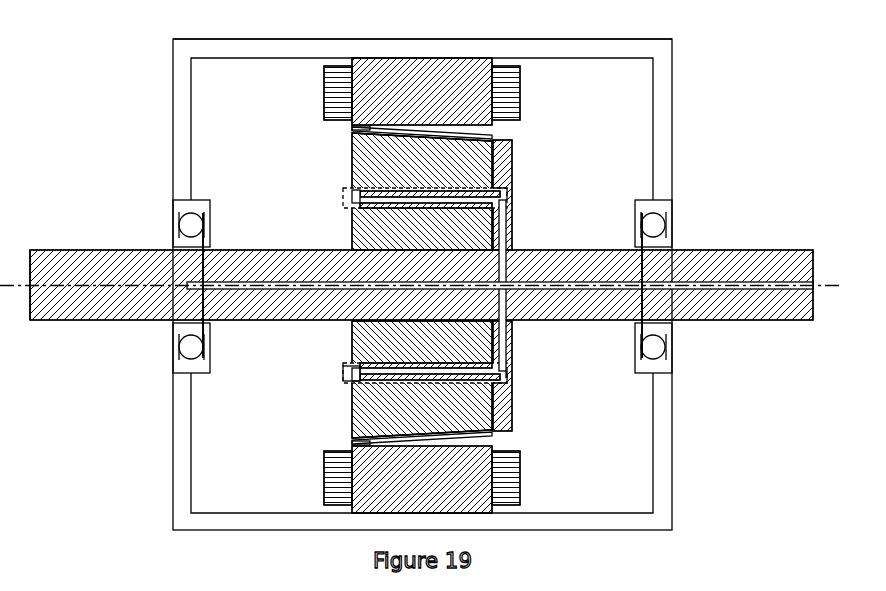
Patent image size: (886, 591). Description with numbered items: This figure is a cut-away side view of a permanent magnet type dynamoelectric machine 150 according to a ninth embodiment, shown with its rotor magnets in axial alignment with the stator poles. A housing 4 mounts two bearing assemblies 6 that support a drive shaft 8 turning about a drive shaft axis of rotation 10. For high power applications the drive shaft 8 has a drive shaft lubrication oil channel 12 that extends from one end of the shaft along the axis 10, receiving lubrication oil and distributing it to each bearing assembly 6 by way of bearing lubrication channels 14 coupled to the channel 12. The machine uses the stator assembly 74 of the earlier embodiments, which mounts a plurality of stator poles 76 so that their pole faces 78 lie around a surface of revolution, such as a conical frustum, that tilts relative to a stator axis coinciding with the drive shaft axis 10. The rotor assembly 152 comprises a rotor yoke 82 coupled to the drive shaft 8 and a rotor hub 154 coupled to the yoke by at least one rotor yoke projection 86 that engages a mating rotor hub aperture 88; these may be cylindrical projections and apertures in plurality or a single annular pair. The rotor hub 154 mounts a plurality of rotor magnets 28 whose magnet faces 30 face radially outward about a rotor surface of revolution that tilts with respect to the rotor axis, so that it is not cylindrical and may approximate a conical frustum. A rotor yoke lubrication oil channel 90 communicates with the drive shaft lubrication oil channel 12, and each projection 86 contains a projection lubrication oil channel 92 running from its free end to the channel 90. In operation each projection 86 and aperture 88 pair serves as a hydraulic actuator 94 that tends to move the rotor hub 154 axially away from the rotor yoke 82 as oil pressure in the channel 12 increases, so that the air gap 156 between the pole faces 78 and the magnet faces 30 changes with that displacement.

The housing 4 is at (618, 60).
The bearing assembly 6 is at (176, 201).
The drive shaft 8 is at (743, 250).
The drive shaft axis of rotation 10 is at (15, 290).
The drive shaft lubrication oil channel 12 is at (815, 285).
The bearing lubrication channel 14 is at (205, 243).
The rotor magnet 28 is at (352, 128).
The magnet face 30 is at (408, 128).
The stator assembly 74 is at (350, 60).
The stator pole 76 is at (498, 67).
The pole face 78 is at (352, 153).
The rotor yoke 82 is at (512, 233).
The rotor yoke projection 86 is at (350, 202).
The rotor hub aperture 88 is at (357, 190).
The rotor yoke lubrication oil channel 90 is at (503, 272).
The projection lubrication oil channel 92 is at (415, 192).
The hydraulic actuator 94 is at (512, 188).
The dynamoelectric machine 150 is at (100, 108).
The rotor assembly 152 is at (516, 378).
The rotor hub 154 is at (352, 338).
The air gap 156 is at (390, 128).